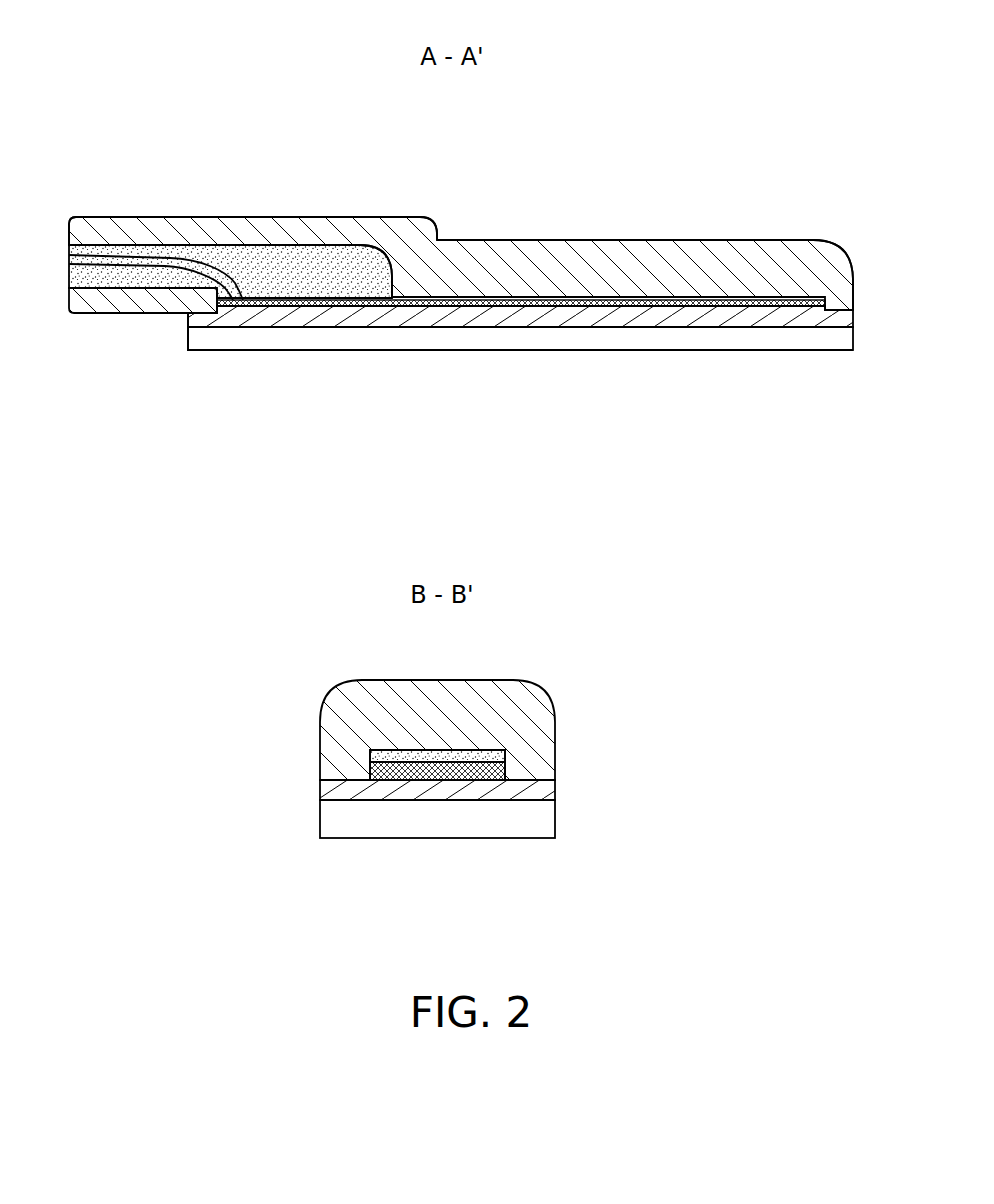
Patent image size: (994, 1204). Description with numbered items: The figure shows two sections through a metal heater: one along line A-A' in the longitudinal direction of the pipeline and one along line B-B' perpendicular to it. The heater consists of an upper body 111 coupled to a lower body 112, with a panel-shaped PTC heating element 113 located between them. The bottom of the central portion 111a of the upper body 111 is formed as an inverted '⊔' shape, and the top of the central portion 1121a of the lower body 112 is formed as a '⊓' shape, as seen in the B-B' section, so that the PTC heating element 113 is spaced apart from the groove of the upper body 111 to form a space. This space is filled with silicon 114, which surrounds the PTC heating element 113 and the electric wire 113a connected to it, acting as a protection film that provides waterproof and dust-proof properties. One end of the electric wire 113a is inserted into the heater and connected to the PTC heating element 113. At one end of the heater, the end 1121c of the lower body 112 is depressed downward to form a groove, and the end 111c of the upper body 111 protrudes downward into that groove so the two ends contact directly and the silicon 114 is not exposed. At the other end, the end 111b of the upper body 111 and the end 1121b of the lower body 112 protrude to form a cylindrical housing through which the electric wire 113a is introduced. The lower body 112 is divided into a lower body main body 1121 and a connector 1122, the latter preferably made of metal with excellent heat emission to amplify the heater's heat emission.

The upper body 111 is at (398, 147).
The central portion of the upper body 111a is at (562, 260).
The other end of the upper body 111b is at (398, 228).
The one end of the upper body 111c is at (838, 255).
The lower body 112 is at (537, 430).
The lower body main body 1121 is at (538, 327).
The central portion of the lower body 1121a is at (448, 312).
The other end of the lower body 1121b is at (141, 304).
The one end of the lower body 1121c is at (840, 318).
The connector 1122 is at (629, 337).
The PTC heating element 113 is at (320, 303).
The electric wire 113a is at (122, 262).
The silicon 114 is at (255, 262).